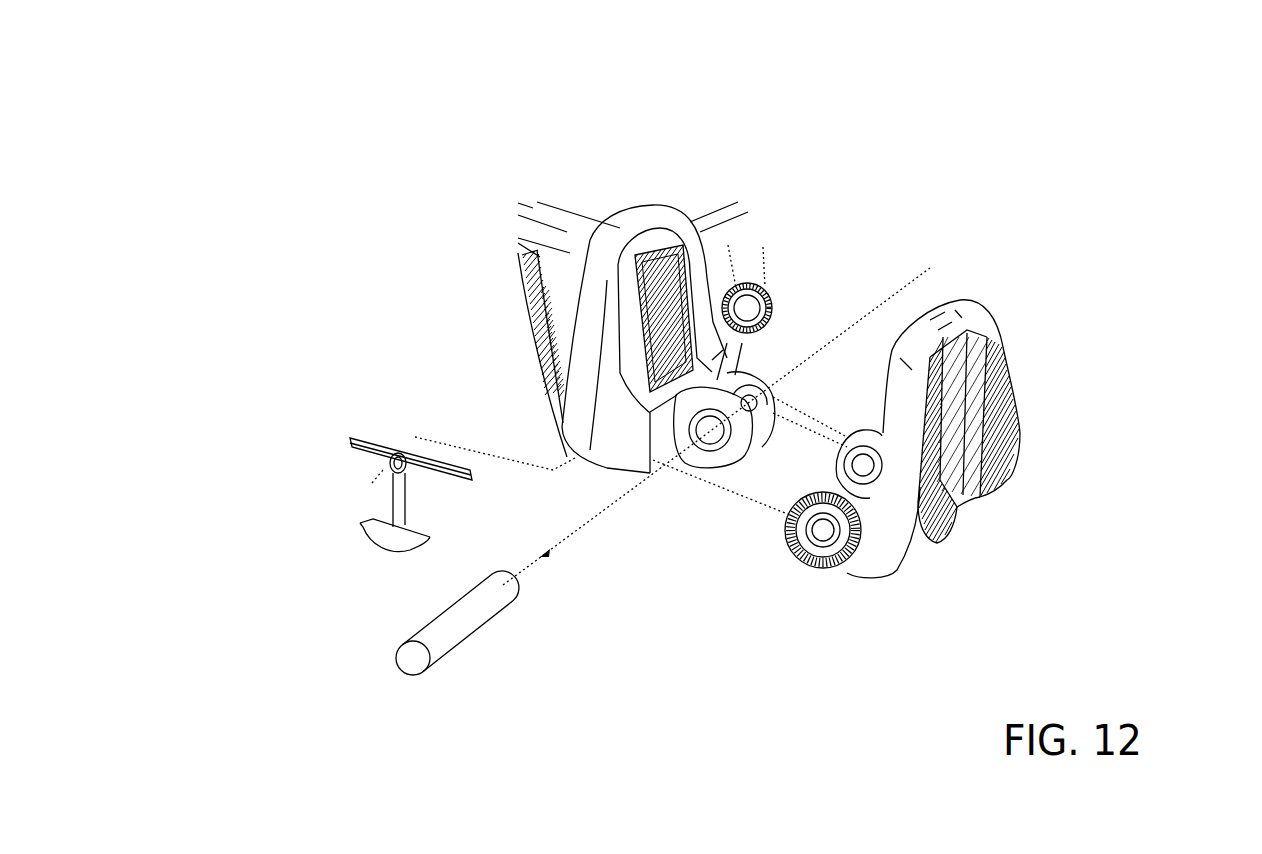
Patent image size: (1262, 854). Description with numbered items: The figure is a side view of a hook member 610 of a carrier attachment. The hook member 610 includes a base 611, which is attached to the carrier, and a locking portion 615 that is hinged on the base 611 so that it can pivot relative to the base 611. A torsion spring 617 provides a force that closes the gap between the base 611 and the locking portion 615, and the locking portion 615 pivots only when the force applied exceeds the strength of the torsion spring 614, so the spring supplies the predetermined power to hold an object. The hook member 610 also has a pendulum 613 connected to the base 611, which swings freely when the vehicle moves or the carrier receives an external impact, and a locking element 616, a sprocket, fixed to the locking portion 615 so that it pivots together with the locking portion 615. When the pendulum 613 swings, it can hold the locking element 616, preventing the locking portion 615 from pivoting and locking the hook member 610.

The hook member 610 is at (300, 195).
The base 611 is at (673, 187).
The pendulum 613 is at (325, 483).
The torsion spring 614 is at (772, 292).
The locking portion 615 is at (992, 280).
The locking element 616 is at (808, 554).
The torsion spring 617 is at (473, 617).